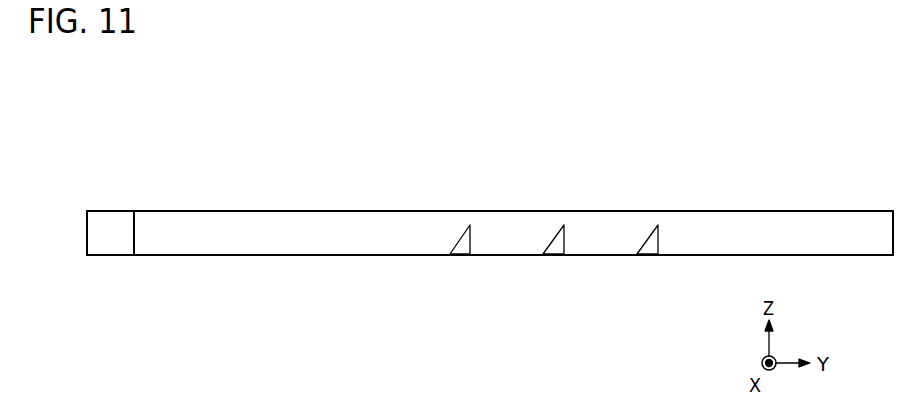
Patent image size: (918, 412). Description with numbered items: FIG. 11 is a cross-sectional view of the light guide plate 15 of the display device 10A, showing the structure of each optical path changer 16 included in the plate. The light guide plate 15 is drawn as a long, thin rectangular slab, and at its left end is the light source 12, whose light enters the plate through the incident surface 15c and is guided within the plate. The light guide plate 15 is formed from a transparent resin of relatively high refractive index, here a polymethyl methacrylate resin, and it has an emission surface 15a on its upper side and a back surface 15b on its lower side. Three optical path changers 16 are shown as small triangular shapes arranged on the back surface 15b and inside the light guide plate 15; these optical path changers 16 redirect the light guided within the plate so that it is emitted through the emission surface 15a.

The display device 10A is at (136, 86).
The light source 12 is at (112, 248).
The light guide plate 15 is at (829, 225).
The emission surface 15a is at (285, 210).
The back surface 15b is at (285, 256).
The incident surface 15c is at (135, 229).
The optical path changer 16 is at (665, 260).